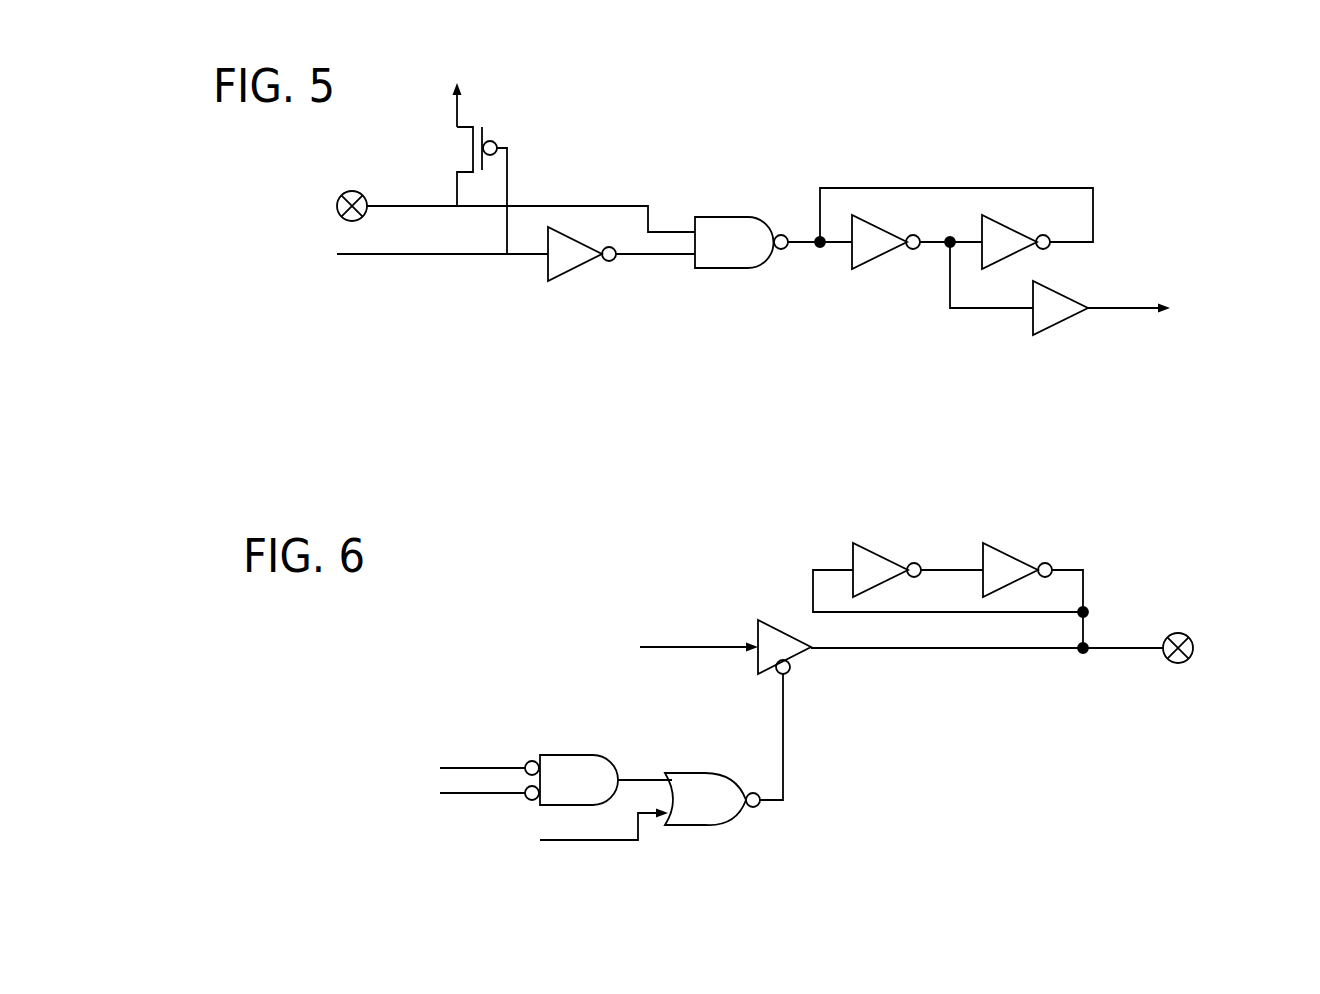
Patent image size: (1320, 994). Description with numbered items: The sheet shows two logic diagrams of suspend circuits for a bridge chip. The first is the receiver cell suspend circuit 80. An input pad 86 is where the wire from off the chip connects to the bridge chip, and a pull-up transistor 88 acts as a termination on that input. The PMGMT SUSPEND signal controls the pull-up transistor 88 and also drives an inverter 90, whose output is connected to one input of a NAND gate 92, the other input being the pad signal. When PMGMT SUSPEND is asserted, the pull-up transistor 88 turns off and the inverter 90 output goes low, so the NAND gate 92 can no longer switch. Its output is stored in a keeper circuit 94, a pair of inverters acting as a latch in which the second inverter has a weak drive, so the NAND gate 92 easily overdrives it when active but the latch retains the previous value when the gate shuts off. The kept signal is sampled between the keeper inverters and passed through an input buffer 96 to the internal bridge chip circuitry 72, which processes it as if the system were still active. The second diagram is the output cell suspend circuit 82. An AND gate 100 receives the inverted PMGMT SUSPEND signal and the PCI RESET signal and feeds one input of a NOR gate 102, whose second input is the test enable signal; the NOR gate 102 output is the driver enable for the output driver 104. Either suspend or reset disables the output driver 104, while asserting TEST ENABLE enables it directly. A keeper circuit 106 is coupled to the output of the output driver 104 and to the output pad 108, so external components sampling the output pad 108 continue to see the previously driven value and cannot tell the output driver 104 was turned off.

In FIG. 5, the receiver cell suspend circuit 80 is at (798, 100).
In FIG. 6, the output cell suspend circuit 82 is at (798, 823).
In FIG. 5, the input pad 86 is at (355, 195).
In FIG. 5, the pull-up transistor 88 is at (488, 120).
In FIG. 5, the inverter 90 is at (568, 273).
In FIG. 5, the NAND gate 92 is at (727, 270).
In FIG. 5, the keeper circuit 94 is at (1022, 177).
In FIG. 5, the input buffer 96 is at (1063, 322).
In FIG. 5, the internal bridge chip circuitry 72 is at (1178, 292).
In FIG. 6, the internal bridge chip circuitry 72 is at (639, 629).
In FIG. 6, the AND gate 100 is at (573, 755).
In FIG. 6, the NOR gate 102 is at (697, 772).
In FIG. 6, the output driver 104 is at (750, 628).
In FIG. 6, the keeper circuit 106 is at (1022, 537).
In FIG. 6, the output pad 108 is at (1183, 635).